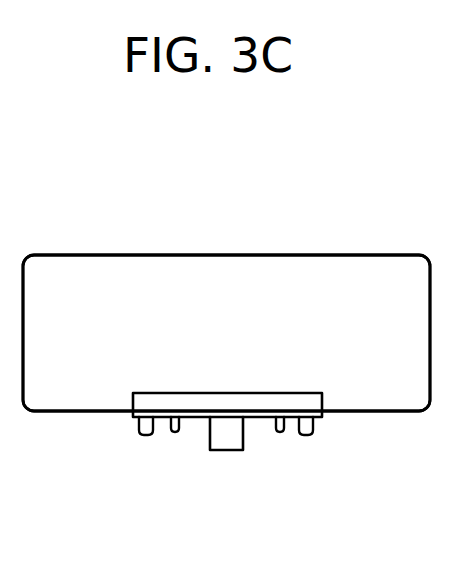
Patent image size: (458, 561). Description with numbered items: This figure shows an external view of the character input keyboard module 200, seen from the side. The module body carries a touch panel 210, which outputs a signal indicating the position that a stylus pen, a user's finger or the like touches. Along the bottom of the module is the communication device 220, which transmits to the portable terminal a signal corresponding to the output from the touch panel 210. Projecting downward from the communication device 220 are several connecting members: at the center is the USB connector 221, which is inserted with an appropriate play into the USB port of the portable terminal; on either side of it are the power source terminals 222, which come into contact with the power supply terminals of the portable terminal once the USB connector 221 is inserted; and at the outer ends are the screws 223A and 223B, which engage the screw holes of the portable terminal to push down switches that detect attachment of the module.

The character input keyboard module 200 is at (249, 254).
The touch panel 210 is at (140, 254).
The communication device 220 is at (262, 418).
The USB connector 221 is at (224, 451).
The power source terminals 222 is at (175, 433).
The screw 223A is at (141, 436).
The screw 223B is at (314, 431).